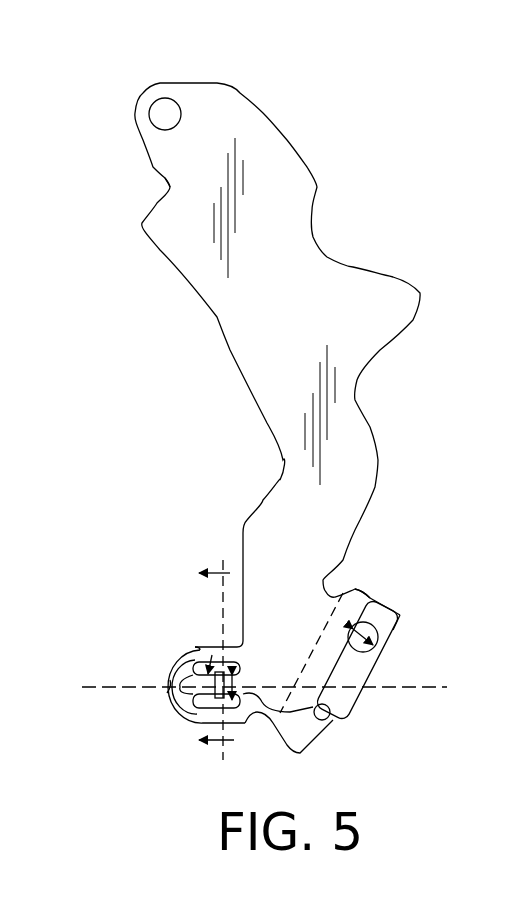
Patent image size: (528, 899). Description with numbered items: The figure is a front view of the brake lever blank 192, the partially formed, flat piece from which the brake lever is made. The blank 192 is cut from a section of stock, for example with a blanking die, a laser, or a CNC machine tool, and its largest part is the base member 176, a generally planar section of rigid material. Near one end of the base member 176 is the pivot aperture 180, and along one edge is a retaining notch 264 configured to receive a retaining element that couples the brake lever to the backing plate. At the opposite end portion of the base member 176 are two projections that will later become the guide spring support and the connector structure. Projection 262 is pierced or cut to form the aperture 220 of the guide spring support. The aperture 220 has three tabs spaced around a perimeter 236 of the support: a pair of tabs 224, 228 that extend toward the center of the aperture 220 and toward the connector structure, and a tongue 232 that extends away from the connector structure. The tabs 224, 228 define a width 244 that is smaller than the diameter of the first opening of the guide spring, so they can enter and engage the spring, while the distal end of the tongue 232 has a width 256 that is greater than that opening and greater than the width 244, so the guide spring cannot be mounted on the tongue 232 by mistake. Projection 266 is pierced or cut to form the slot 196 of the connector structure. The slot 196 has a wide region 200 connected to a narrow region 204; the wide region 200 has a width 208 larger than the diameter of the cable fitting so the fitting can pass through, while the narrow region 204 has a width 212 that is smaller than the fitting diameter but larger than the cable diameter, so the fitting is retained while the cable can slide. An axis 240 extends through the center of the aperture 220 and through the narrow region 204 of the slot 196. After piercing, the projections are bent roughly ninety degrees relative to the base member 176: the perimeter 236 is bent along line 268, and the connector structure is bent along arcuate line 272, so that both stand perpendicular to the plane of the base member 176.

The base member 176 is at (337, 308).
The pivot aperture 180 is at (175, 101).
The brake lever blank 192 is at (399, 116).
The slot 196 is at (393, 650).
The wide region 200 is at (372, 600).
The narrow region 204 is at (332, 714).
The width 208 is at (348, 640).
The width 212 is at (320, 720).
The aperture 220 is at (212, 655).
The tab 224 is at (183, 652).
The tab 228 is at (210, 690).
The tongue 232 is at (200, 703).
The perimeter 236 is at (167, 693).
The axis 240 is at (417, 687).
The width 244 is at (187, 680).
The width 256 is at (246, 672).
The projection 262 is at (197, 650).
The retaining notch 264 is at (168, 188).
The projection 266 is at (393, 645).
The line 268 is at (270, 683).
The arcuate line 272 is at (371, 598).